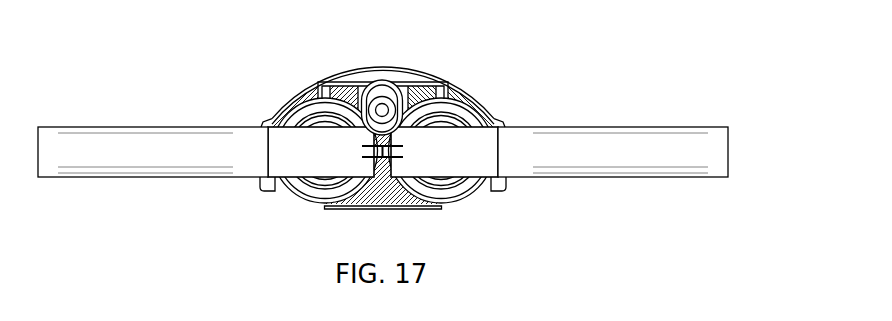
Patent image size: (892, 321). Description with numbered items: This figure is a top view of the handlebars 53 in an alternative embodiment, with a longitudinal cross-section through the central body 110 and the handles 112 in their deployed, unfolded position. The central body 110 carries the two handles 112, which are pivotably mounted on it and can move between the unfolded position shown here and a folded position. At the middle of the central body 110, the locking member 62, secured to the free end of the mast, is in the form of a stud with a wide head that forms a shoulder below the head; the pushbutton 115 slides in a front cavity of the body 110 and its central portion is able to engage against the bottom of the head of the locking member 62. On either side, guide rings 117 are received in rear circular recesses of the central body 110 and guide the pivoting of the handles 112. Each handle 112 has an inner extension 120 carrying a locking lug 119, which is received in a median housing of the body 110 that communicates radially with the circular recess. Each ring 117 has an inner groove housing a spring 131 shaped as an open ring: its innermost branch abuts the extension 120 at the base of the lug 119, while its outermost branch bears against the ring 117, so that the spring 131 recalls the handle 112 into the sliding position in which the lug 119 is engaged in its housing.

The handlebars 53 is at (690, 46).
The locking member 62 is at (408, 88).
The central body 110 is at (483, 110).
The handles 112 is at (121, 126).
The pushbutton 115 is at (338, 73).
The guide rings 117 is at (290, 119).
The locking lugs 119 is at (343, 207).
The inner extension 120 is at (293, 168).
The spring 131 is at (447, 188).